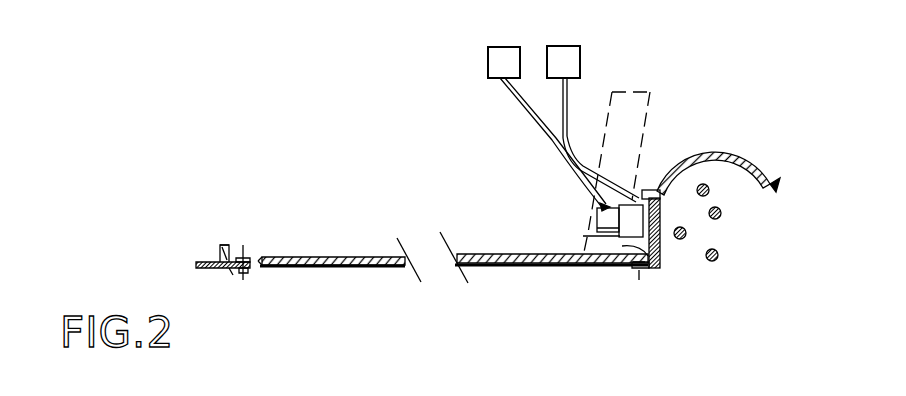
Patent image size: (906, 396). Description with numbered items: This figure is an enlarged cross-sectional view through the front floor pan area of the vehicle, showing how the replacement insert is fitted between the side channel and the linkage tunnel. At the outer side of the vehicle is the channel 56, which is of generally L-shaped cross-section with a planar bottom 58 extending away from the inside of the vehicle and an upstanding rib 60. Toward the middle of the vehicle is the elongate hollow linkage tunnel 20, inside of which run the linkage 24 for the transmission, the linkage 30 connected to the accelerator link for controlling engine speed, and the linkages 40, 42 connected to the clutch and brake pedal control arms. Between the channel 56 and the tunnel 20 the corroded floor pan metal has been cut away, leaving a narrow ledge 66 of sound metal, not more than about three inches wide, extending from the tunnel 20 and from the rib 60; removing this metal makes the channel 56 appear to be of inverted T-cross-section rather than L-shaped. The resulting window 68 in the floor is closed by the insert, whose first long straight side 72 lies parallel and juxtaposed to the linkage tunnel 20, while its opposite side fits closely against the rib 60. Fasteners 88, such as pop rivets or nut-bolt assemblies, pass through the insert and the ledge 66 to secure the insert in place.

The linkage tunnel 20 is at (735, 155).
The linkage 24 is at (687, 233).
The linkage 30 is at (710, 189).
The linkage 40 is at (719, 257).
The linkage 42 is at (722, 212).
The channel 56 is at (220, 244).
The planar bottom 58 is at (205, 262).
The upstanding rib 60 is at (228, 248).
The ledge 66 is at (231, 270).
The window 68 is at (247, 272).
The first long straight side 72 is at (597, 232).
The fasteners 88 is at (245, 246).